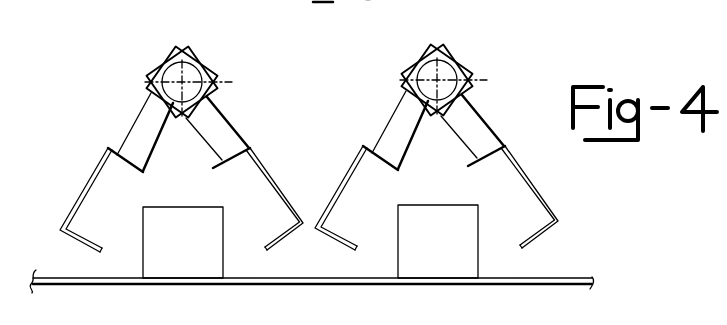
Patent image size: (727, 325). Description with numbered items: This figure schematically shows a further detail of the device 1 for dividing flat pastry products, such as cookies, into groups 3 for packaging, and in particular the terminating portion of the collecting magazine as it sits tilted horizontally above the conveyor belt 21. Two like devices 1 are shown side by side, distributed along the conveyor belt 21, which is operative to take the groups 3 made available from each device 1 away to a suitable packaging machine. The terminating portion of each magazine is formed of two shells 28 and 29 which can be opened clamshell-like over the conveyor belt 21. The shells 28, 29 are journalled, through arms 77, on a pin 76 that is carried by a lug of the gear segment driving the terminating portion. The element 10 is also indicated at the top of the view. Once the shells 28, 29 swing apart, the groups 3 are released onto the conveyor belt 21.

The device 1 is at (88, 96).
The groups 3 is at (192, 257).
The frame member 10 is at (373, 0).
The conveyor belt 21 is at (560, 276).
The shell 28 is at (82, 190).
The shell 29 is at (268, 163).
The pin 76 is at (157, 75).
The arms 77 is at (147, 122).